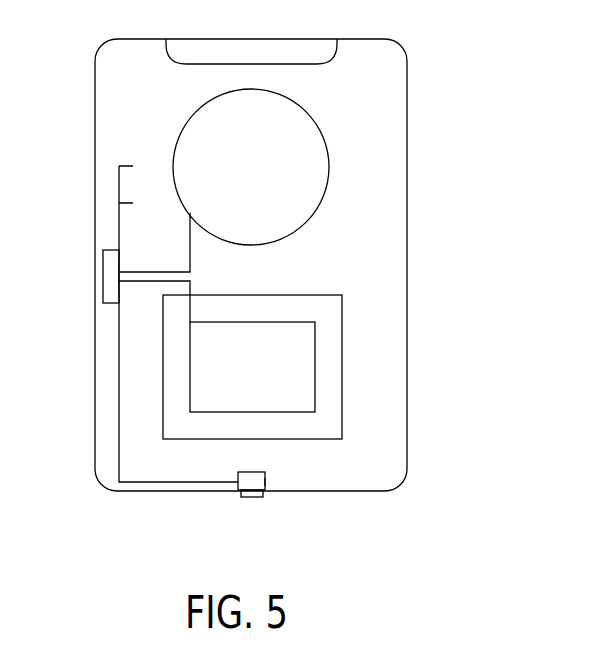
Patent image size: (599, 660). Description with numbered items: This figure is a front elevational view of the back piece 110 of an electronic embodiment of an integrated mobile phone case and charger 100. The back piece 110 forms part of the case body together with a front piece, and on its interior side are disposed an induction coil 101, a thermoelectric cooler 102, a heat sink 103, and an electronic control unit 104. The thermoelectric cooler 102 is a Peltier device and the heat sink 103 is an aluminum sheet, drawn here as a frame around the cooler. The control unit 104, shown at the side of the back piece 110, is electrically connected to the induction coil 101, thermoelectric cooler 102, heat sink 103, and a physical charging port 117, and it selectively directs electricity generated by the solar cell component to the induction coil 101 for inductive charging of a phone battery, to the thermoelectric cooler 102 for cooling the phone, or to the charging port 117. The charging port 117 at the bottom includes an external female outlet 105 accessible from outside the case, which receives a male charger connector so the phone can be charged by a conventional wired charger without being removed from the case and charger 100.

The integrated mobile phone case and charger 100 is at (492, 104).
The back piece 110 is at (395, 80).
The induction coil 101 is at (330, 167).
The thermoelectric cooler 102 is at (315, 347).
The heat sink 103 is at (342, 318).
The electronic control unit 104 is at (103, 277).
The external female outlet 105 is at (253, 498).
The charging port 117 is at (265, 483).